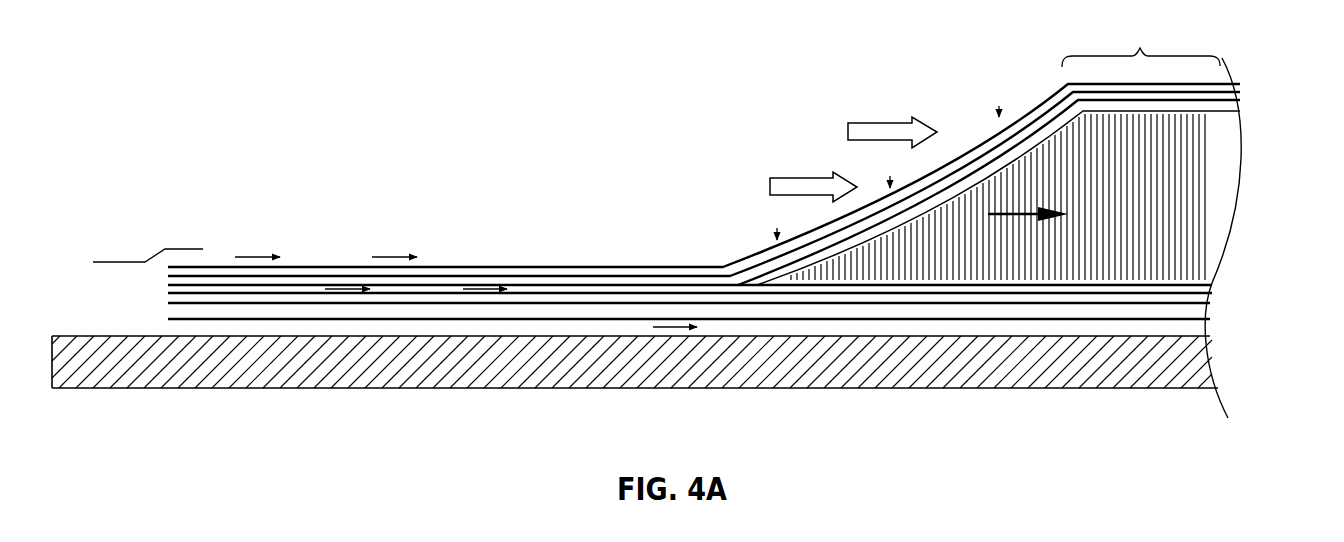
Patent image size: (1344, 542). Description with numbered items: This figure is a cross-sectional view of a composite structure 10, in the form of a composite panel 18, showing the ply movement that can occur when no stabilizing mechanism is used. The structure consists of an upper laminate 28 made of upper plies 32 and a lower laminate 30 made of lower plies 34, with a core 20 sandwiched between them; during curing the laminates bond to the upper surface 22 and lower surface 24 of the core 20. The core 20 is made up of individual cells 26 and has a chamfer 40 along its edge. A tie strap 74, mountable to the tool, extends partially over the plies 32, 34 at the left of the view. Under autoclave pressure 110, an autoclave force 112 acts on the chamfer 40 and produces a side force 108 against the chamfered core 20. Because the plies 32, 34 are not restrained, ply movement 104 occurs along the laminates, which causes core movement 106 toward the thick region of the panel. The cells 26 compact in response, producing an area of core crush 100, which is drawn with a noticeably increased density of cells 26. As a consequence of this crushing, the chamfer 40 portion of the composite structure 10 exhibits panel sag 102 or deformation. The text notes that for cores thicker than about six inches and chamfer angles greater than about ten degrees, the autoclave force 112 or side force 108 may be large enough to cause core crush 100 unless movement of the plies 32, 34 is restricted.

The composite structure 10 is at (747, 197).
The composite panel 18 is at (300, 122).
The core 20 is at (1038, 198).
The cells 26 is at (1202, 180).
The upper surface 22 is at (1233, 112).
The lower surface 24 is at (1212, 277).
The upper laminate 28 is at (747, 170).
The upper plies 32 is at (1235, 85).
The lower laminate 30 is at (734, 321).
The lower plies 34 is at (1207, 308).
The chamfer 40 is at (747, 170).
The panel sag 102 is at (972, 153).
The tie strap 74 is at (112, 262).
The core crush 100 is at (1141, 41).
The ply movement 104 is at (248, 257).
The core movement 106 is at (1018, 220).
The side force 108 is at (808, 177).
The autoclave pressure 110 is at (999, 108).
The autoclave force 112 is at (702, 167).